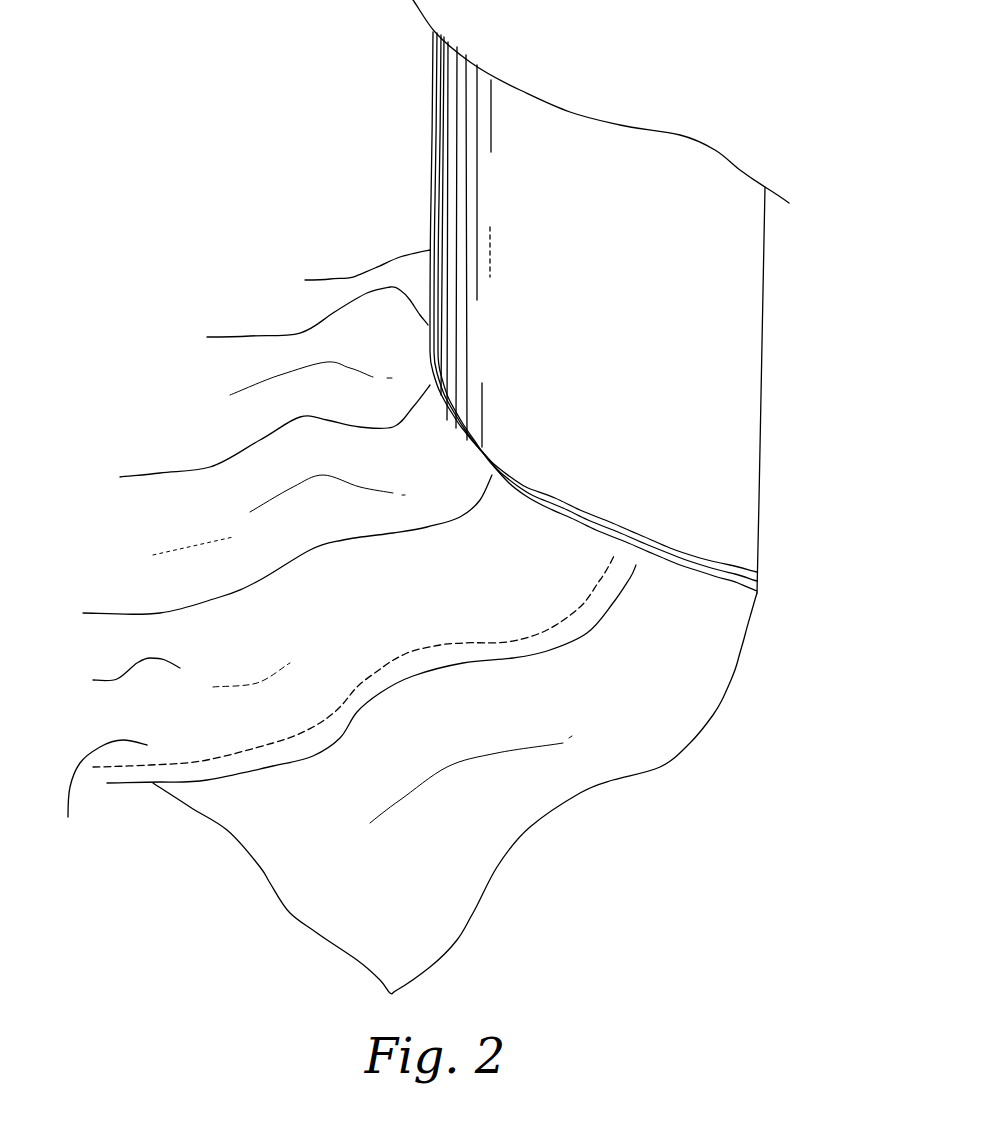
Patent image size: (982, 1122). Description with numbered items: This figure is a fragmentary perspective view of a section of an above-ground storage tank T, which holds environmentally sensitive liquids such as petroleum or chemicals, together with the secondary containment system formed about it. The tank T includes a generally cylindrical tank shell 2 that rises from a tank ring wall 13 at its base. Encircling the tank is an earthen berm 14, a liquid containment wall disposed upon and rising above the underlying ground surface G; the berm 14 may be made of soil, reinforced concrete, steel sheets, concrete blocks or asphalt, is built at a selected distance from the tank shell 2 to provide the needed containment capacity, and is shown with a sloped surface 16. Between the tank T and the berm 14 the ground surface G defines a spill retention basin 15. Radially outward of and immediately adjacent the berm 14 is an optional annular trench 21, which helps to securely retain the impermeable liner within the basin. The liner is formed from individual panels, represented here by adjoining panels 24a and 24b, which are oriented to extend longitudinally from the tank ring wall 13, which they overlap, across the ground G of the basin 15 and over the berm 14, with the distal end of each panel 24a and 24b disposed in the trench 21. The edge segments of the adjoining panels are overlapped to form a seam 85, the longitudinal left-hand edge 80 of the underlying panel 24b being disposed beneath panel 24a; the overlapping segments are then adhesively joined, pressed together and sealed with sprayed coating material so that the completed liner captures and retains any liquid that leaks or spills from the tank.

The tank shell 2 is at (760, 470).
The above-ground storage tank T is at (770, 302).
The ground surface G is at (401, 330).
The tank ring wall 13 is at (605, 528).
The earthen berm 14 is at (357, 343).
The spill retention basin 15 is at (377, 403).
The third finger fold of glove 16 is at (300, 450).
The trench 21 is at (123, 580).
The panel 24a is at (308, 795).
The panel 24b is at (270, 883).
The longitudinal left-hand edge 80 is at (507, 642).
The seam 85 is at (330, 752).